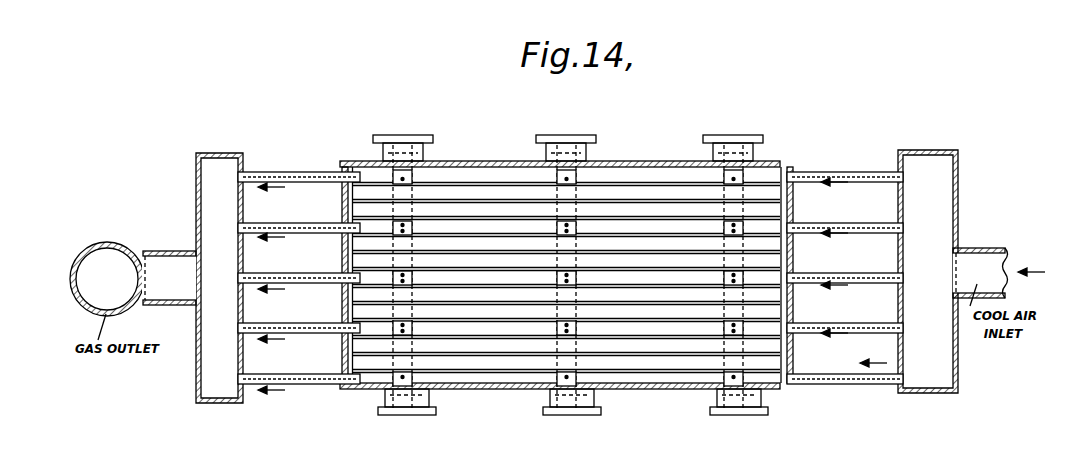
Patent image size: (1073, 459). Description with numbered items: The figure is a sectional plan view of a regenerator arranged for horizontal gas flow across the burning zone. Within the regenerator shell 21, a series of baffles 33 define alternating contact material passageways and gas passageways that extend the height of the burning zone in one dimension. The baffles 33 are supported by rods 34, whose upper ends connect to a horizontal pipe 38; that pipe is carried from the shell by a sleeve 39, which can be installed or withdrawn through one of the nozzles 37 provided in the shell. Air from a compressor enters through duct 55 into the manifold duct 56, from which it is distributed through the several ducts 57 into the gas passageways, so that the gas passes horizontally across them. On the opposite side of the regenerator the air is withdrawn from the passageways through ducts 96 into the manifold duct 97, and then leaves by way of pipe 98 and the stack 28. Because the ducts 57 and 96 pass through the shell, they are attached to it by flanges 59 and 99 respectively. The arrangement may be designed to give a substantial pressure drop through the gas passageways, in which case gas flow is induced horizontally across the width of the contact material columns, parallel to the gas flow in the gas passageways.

The regenerator shell 21 is at (353, 163).
The stack 28 is at (113, 243).
The baffles 33 is at (522, 362).
The rods 34 is at (413, 381).
The nozzles 37 is at (432, 147).
The horizontal pipe 38 is at (532, 163).
The sleeve 39 is at (398, 136).
The duct 55 is at (992, 248).
The manifold duct 56 is at (938, 150).
The ducts 57 is at (875, 172).
The flanges 59 is at (795, 162).
The ducts 96 is at (285, 275).
The manifold duct 97 is at (213, 152).
The pipe 98 is at (168, 305).
The flanges 99 is at (343, 166).